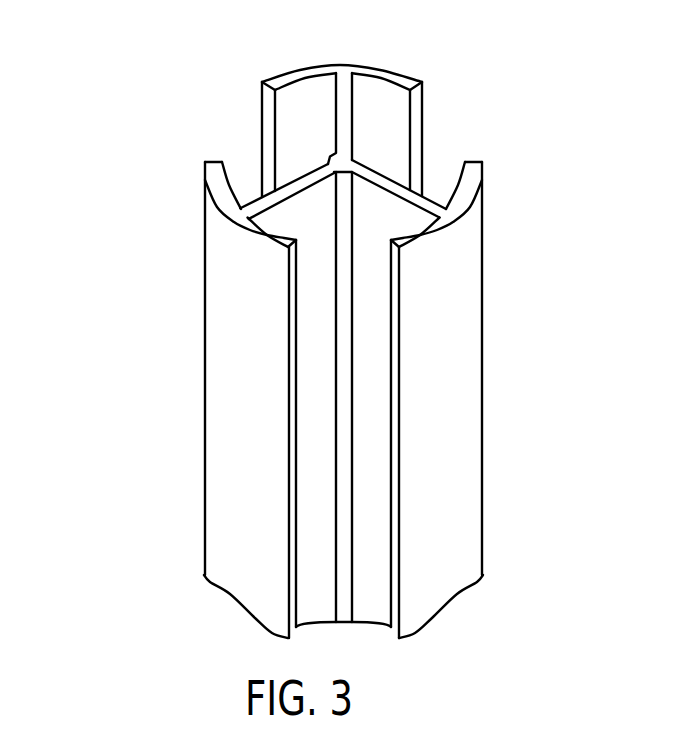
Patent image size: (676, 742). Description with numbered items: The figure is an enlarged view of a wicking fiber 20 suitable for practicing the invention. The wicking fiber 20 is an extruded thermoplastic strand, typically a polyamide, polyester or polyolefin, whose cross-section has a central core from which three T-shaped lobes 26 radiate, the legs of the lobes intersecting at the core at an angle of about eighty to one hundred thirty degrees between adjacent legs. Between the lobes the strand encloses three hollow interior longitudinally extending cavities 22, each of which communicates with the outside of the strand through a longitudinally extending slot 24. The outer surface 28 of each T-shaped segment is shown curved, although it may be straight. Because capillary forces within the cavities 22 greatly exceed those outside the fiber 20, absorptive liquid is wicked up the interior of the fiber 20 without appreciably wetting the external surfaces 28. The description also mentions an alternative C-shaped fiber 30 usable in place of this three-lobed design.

The wicking fiber 20 is at (102, 423).
The hollow interior longitudinally extending cavity 22 is at (317, 108).
The longitudinally extending slot 24 is at (245, 145).
The T-shaped lobe 26 is at (265, 205).
The external surface 28 is at (457, 487).
The C-shaped fiber 30 is at (343, 162).